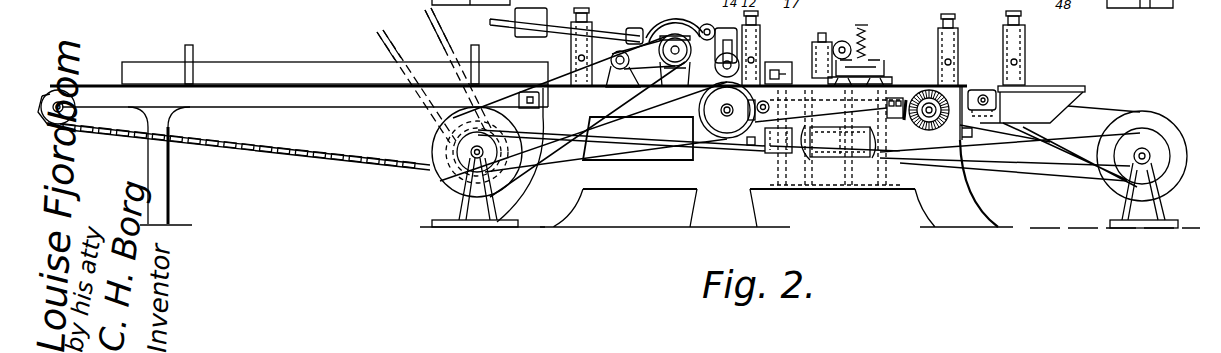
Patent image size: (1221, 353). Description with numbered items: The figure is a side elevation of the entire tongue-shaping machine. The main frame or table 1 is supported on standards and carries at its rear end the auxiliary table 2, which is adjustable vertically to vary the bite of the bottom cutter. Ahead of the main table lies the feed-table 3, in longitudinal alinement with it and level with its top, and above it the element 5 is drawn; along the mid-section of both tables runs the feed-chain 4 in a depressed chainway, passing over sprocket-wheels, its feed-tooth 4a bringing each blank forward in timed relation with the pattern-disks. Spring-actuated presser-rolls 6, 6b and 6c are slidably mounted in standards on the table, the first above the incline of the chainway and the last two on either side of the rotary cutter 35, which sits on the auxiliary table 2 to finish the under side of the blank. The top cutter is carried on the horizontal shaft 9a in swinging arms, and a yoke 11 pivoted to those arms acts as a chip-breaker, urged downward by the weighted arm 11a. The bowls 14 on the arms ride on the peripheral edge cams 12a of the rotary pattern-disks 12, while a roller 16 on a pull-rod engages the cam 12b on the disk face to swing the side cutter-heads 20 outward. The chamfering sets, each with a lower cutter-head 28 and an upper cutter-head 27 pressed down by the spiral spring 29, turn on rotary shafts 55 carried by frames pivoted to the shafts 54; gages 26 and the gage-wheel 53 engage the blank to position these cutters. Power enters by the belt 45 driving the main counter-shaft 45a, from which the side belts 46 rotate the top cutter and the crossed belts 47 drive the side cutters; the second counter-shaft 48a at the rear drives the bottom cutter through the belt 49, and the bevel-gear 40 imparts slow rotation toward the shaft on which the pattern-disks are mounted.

The main frame or table 1 is at (776, 156).
The auxiliary table 2 is at (1043, 105).
The feed-table 3 is at (298, 84).
The feed-chain 4 is at (358, 153).
The feed-tooth 4a is at (105, 84).
The feed table 5 is at (255, 69).
The presser-roll 6 is at (572, 70).
The presser-roll 6b is at (954, 72).
The presser-roll 6c is at (1025, 74).
The horizontal shaft 9a is at (676, 62).
The yoke 11 is at (660, 20).
The weighted arm 11a is at (583, 24).
The rotary pattern-disk 12 is at (720, 124).
The peripheral edge cam 12a is at (708, 96).
The cam or incline 12b is at (732, 130).
The bowl or bearing-roller 14 is at (738, 60).
The bowl or roller 16 is at (752, 152).
The side cutter-head 20 is at (785, 66).
The guide or gage 26 is at (884, 74).
The upper cutter-head 27 is at (866, 58).
The lower cutter-head 28 is at (884, 84).
The spiral spring 29 is at (866, 34).
The rotary cutter 35 is at (982, 90).
The bevel-gear 40 is at (930, 132).
The belt 45 is at (386, 46).
The main counter-shaft 45a is at (468, 160).
The side belt 46 is at (613, 110).
The crossed belt 47 is at (650, 158).
The second counter-shaft 48a is at (1150, 150).
The belt 49 is at (1115, 108).
The gage-wheel 53 is at (842, 40).
The shaft 54 is at (818, 40).
The rotary shaft 55 is at (866, 156).